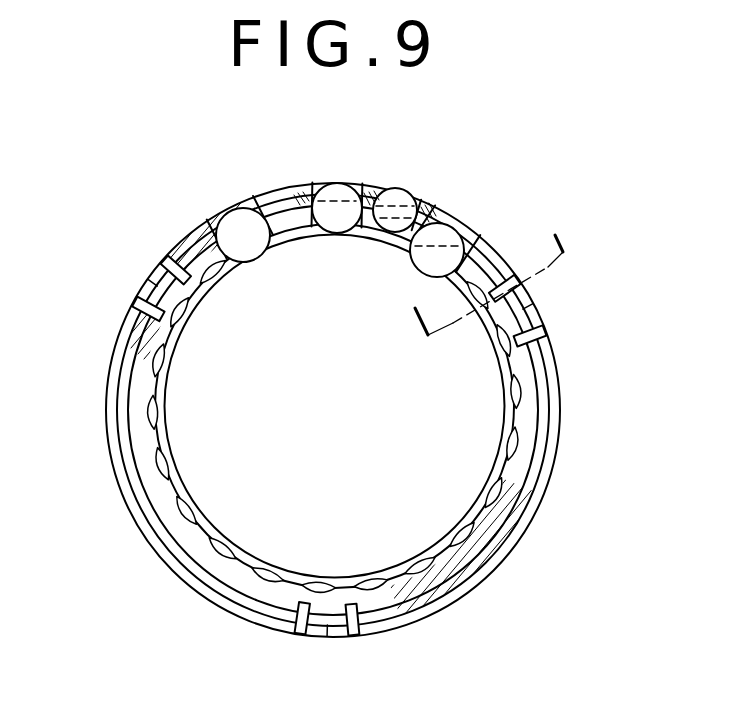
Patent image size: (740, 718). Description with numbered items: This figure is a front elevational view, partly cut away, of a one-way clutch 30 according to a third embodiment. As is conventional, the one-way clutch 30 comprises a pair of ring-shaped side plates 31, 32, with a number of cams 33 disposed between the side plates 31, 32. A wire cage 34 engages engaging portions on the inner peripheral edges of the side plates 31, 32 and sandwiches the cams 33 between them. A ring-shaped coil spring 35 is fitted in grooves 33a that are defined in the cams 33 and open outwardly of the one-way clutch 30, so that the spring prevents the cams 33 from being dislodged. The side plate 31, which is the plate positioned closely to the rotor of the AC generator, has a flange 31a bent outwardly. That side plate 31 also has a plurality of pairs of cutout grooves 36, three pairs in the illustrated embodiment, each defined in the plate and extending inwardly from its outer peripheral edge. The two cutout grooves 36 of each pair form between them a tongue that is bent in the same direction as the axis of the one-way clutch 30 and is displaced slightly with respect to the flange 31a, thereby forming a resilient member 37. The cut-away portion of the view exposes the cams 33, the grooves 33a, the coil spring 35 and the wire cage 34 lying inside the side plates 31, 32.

The one-way clutch 30 is at (342, 133).
The side plate 31 is at (140, 450).
The flange 31a is at (547, 438).
The side plate 32 is at (392, 195).
The cam 33 is at (407, 215).
The groove 33a is at (262, 197).
The wire cage 34 is at (168, 372).
The ring-shaped coil spring 35 is at (294, 192).
The cutout groove 36 is at (157, 253).
The resilient member 37 is at (146, 286).